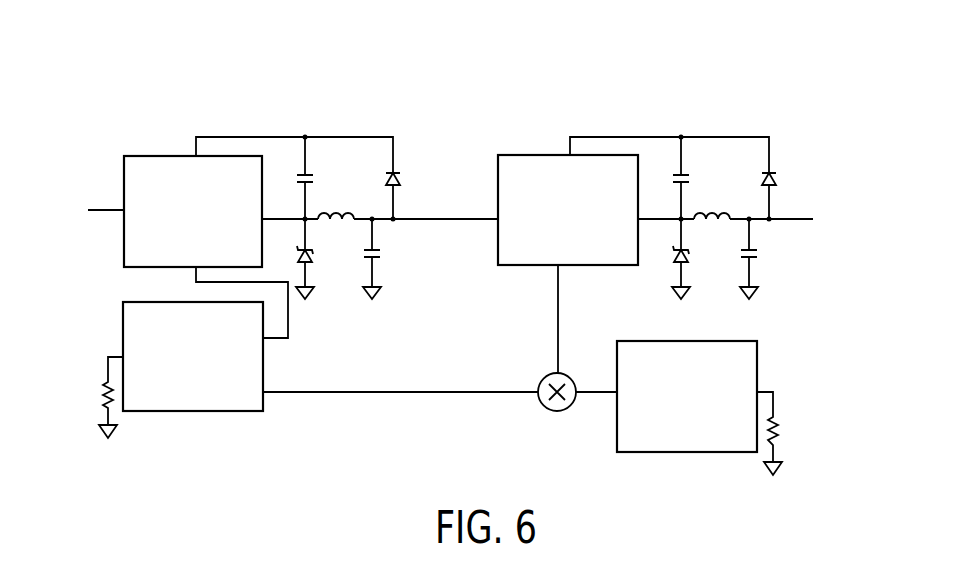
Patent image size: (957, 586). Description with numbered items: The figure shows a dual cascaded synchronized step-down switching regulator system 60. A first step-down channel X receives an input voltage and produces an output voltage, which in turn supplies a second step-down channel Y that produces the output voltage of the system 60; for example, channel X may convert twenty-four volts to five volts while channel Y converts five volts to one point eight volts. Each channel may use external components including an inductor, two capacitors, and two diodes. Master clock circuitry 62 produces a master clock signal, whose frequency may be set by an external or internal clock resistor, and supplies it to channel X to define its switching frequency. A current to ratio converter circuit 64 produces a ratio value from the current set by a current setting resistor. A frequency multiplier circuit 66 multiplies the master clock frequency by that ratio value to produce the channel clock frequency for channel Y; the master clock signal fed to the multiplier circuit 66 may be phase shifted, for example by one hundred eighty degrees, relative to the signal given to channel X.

The dual cascaded synchronized step-down switching regulator system 60 is at (483, 66).
The master clock circuitry 62 is at (228, 411).
The current to ratio converter circuit 64 is at (680, 452).
The frequency multiplier circuit 66 is at (557, 411).